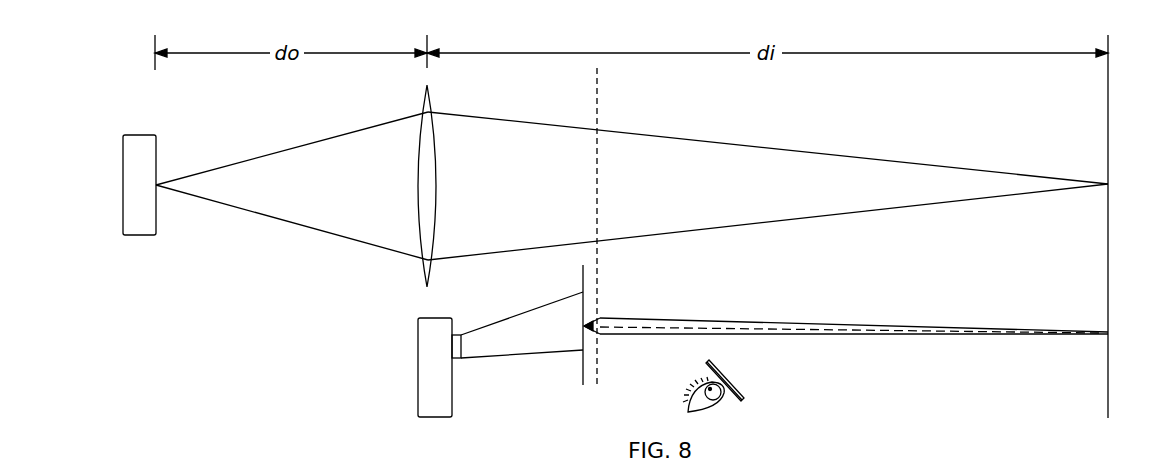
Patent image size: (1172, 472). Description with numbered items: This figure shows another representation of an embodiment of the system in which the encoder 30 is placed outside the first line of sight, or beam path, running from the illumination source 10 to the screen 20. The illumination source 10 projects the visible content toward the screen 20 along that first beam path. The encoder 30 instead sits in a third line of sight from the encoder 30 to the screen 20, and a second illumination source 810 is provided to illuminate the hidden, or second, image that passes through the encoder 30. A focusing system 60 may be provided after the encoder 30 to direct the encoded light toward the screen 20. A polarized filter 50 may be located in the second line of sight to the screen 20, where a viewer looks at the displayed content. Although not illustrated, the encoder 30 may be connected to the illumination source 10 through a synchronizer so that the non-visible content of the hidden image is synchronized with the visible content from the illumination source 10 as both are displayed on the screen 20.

The illumination source 10 is at (139, 133).
The screen 20 is at (1108, 113).
The encoder 30 is at (583, 274).
The focusing system 60 is at (597, 286).
The second illumination source 810 is at (435, 318).
The polarized filter 50 is at (745, 397).